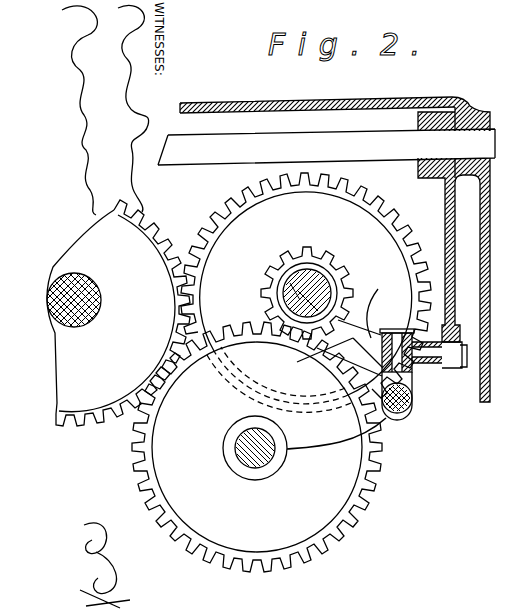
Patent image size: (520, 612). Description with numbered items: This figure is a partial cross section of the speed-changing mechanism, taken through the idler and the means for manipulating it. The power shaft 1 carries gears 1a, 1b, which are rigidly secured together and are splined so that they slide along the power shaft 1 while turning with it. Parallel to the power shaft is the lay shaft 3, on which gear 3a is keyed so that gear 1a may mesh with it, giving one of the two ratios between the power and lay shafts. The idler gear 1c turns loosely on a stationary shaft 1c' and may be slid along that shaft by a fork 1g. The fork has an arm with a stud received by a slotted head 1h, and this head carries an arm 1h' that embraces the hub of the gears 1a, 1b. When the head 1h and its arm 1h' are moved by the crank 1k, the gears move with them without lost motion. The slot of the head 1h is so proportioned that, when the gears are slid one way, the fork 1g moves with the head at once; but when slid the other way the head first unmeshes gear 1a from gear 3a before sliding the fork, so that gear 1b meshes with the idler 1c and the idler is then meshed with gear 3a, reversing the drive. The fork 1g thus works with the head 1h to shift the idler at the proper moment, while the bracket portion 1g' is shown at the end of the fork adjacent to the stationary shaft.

The power shaft 1 is at (337, 282).
The gear 1a is at (383, 208).
The gear 1b is at (307, 250).
The idler gear 1c is at (273, 447).
The stationary shaft 1c' is at (255, 466).
The fork 1g is at (336, 451).
The bracket 1g' is at (325, 255).
The slotted head 1h is at (358, 332).
The arm 1h' is at (319, 364).
The crank 1k is at (447, 268).
The lay shaft 3 is at (97, 295).
The gear 3a is at (158, 223).